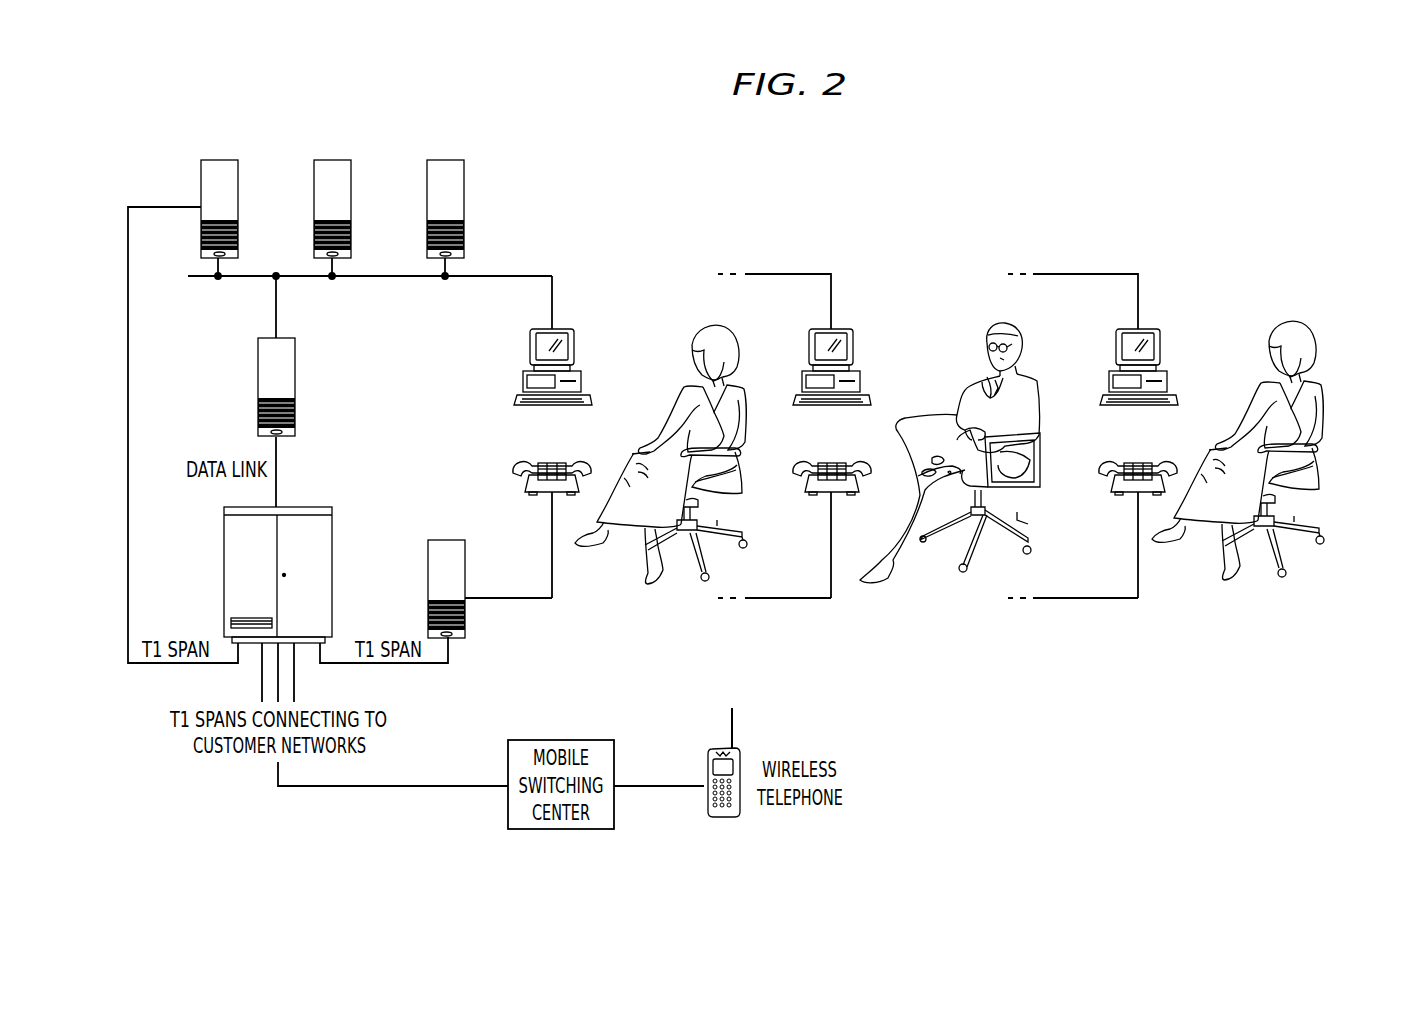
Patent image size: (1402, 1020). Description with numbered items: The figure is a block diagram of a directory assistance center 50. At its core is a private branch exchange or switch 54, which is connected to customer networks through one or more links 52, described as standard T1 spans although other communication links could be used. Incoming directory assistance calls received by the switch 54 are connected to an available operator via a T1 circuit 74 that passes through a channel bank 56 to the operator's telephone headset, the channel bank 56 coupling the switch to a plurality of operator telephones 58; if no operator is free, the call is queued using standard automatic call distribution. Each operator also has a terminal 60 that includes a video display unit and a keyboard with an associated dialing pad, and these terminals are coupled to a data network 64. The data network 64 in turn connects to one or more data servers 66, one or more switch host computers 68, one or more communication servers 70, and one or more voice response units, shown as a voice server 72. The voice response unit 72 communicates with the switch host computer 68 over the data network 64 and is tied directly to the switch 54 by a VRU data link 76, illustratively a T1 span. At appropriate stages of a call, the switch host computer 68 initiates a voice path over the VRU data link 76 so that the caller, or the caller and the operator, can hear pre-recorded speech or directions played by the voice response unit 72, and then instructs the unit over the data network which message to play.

The directory assistance center 50 is at (791, 125).
The links 52 is at (305, 688).
The switch 54 is at (224, 560).
The channel bank 56 is at (428, 567).
The operator telephones 58 is at (1153, 441).
The terminal 60 is at (1170, 307).
The data network 64 is at (530, 276).
The data servers 66 is at (463, 168).
The switch host computer 68 is at (258, 408).
The communication servers 70 is at (333, 160).
The voice response unit 72 is at (201, 178).
The T1 circuit 74 is at (535, 598).
The VRU data link 76 is at (128, 663).